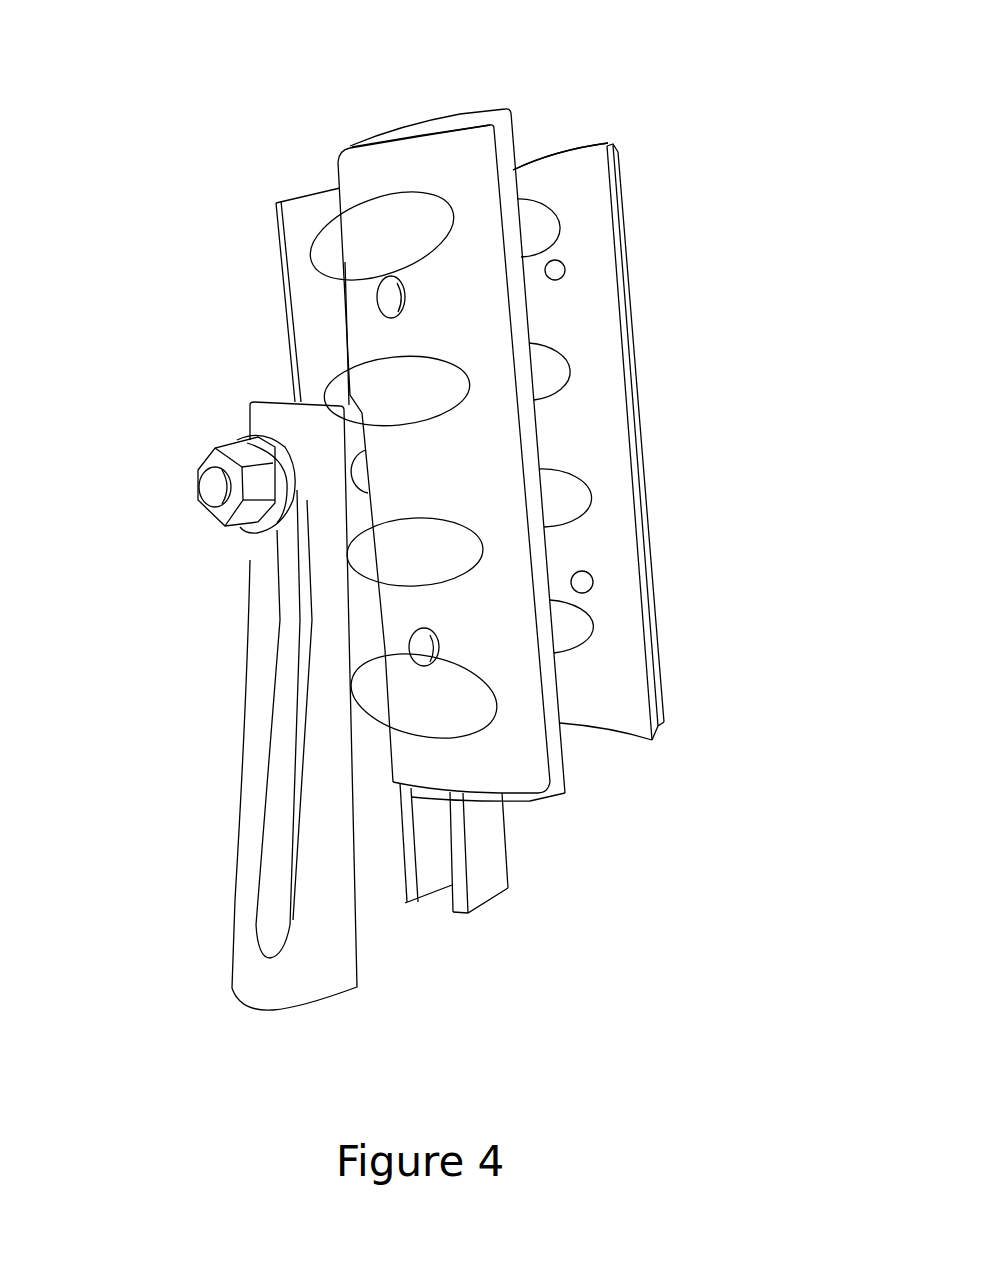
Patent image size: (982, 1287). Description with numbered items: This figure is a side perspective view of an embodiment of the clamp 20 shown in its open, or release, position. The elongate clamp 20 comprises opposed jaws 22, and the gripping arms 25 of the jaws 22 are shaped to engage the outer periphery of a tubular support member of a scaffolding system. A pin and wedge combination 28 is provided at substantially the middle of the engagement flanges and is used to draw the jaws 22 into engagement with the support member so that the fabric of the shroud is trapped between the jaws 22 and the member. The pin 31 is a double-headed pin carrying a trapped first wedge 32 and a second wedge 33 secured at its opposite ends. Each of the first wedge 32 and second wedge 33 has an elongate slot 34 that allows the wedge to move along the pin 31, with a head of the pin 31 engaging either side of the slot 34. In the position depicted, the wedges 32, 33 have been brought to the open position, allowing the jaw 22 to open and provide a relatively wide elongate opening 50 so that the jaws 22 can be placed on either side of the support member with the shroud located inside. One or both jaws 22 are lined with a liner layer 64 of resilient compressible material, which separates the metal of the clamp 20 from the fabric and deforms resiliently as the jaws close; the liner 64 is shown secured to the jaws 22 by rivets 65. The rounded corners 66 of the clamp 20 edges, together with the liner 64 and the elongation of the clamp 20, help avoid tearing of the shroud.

The clamp 20 is at (501, 58).
The jaws 22 is at (657, 700).
The gripping arms 25 is at (652, 557).
The pin and wedge combination 28 is at (230, 537).
The pin 31 is at (210, 490).
The first wedge 32 is at (327, 937).
The second wedge 33 is at (480, 877).
The elongate slot 34 is at (287, 753).
The elongate opening 50 is at (553, 127).
The liner layer 64 is at (420, 122).
The rivets 65 is at (388, 297).
The rounded corners 66 is at (470, 112).